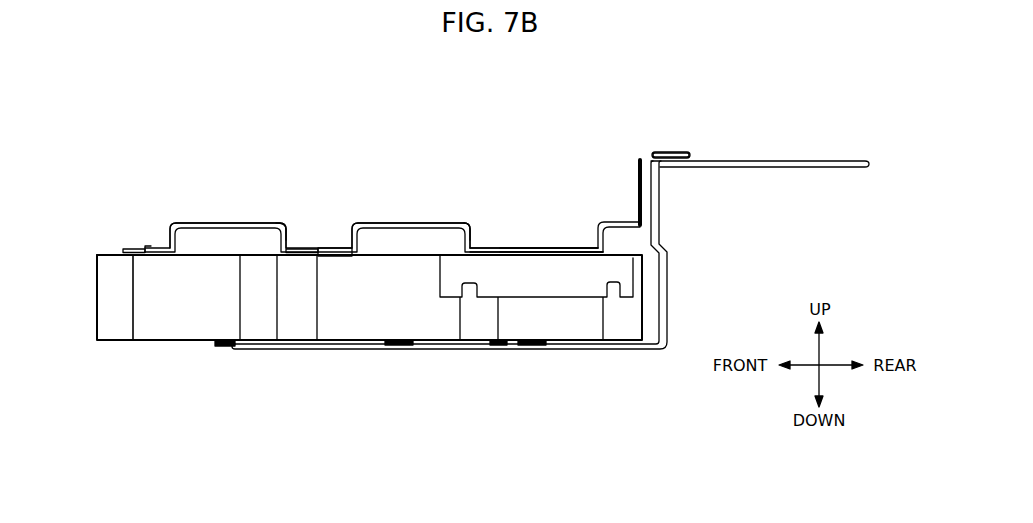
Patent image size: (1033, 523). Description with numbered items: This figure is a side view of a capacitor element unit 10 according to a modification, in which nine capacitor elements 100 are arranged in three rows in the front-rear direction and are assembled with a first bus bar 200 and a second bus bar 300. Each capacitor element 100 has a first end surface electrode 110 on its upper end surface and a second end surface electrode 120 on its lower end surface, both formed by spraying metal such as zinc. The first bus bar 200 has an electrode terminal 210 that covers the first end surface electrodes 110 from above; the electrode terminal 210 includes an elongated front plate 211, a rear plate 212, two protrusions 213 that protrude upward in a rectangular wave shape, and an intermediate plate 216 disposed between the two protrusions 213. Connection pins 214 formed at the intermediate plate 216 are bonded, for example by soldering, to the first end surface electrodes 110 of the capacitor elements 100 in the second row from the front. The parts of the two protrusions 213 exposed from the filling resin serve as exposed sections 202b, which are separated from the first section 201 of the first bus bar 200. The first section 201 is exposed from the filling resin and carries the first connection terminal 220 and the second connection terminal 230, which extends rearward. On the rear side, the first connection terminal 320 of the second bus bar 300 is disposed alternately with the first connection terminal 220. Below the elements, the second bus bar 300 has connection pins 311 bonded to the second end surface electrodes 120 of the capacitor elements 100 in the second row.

The capacitor element unit 10 is at (688, 283).
The capacitor element 100 is at (182, 328).
The first end surface electrode 110 is at (105, 248).
The second end surface electrode 120 is at (123, 345).
The first bus bar 200 is at (572, 238).
The first section 201 is at (633, 188).
The exposed section 202b is at (258, 222).
The electrode terminal 210 is at (495, 245).
The front plate 211 is at (165, 247).
The rear plate 212 is at (538, 246).
The protrusion 213 is at (225, 222).
The connection pin 214 is at (135, 247).
The intermediate plate 216 is at (348, 247).
The first connection terminal 220 is at (658, 153).
The second connection terminal 230 is at (768, 162).
The second bus bar 300 is at (285, 357).
The connection pin 311 is at (225, 350).
The first connection terminal 320 is at (686, 153).